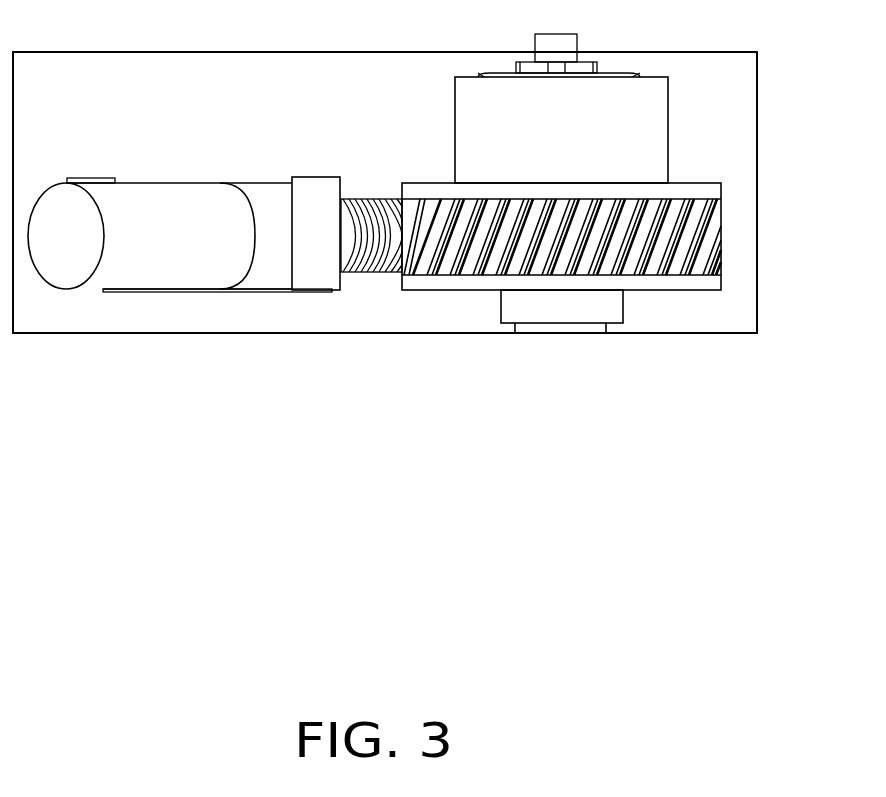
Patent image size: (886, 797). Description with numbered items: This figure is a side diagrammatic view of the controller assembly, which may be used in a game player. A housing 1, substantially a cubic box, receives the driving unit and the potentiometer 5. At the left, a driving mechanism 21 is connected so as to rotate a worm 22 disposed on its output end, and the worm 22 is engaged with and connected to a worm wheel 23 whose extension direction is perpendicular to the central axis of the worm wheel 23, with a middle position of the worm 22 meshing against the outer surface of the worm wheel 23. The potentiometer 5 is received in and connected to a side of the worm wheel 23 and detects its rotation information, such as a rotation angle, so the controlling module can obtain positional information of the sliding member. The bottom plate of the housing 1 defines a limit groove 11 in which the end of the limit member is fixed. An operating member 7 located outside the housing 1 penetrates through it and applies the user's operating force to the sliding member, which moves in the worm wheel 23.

The housing 1 is at (738, 333).
The potentiometer 5 is at (590, 309).
The operating member 7 is at (538, 44).
The limit groove 11 is at (529, 325).
The driving mechanism 21 is at (152, 280).
The worm 22 is at (355, 270).
The worm wheel 23 is at (703, 281).